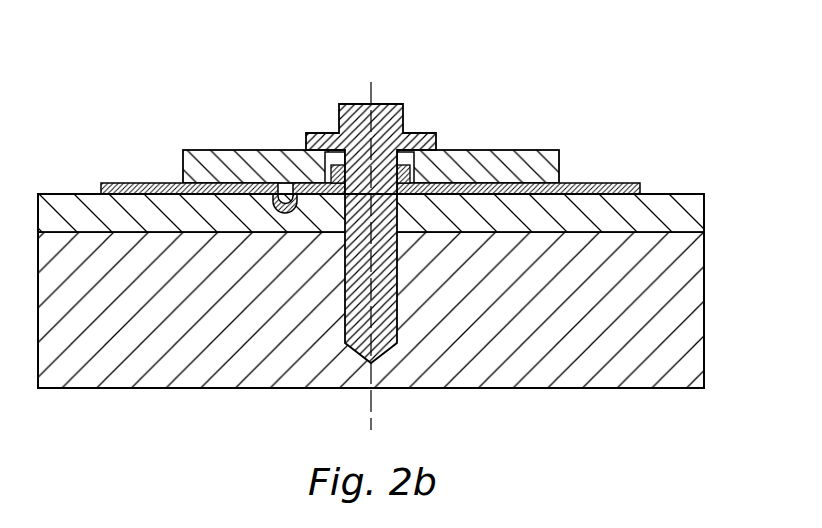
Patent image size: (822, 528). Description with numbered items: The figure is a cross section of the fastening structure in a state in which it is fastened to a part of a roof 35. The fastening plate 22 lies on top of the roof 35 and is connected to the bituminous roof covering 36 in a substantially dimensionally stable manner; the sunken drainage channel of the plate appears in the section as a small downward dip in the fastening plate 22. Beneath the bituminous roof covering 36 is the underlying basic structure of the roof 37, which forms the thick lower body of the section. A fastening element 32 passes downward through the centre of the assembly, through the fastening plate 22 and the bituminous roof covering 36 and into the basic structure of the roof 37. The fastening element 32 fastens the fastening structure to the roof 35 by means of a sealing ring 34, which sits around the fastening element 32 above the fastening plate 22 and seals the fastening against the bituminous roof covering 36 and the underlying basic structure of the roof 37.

The fastening plate 22 is at (603, 180).
The fastening element 32 is at (385, 92).
The sealing ring 34 is at (223, 145).
The roof 35 is at (723, 160).
The bituminous roof covering 36 is at (697, 204).
The basic structure of the roof 37 is at (694, 298).